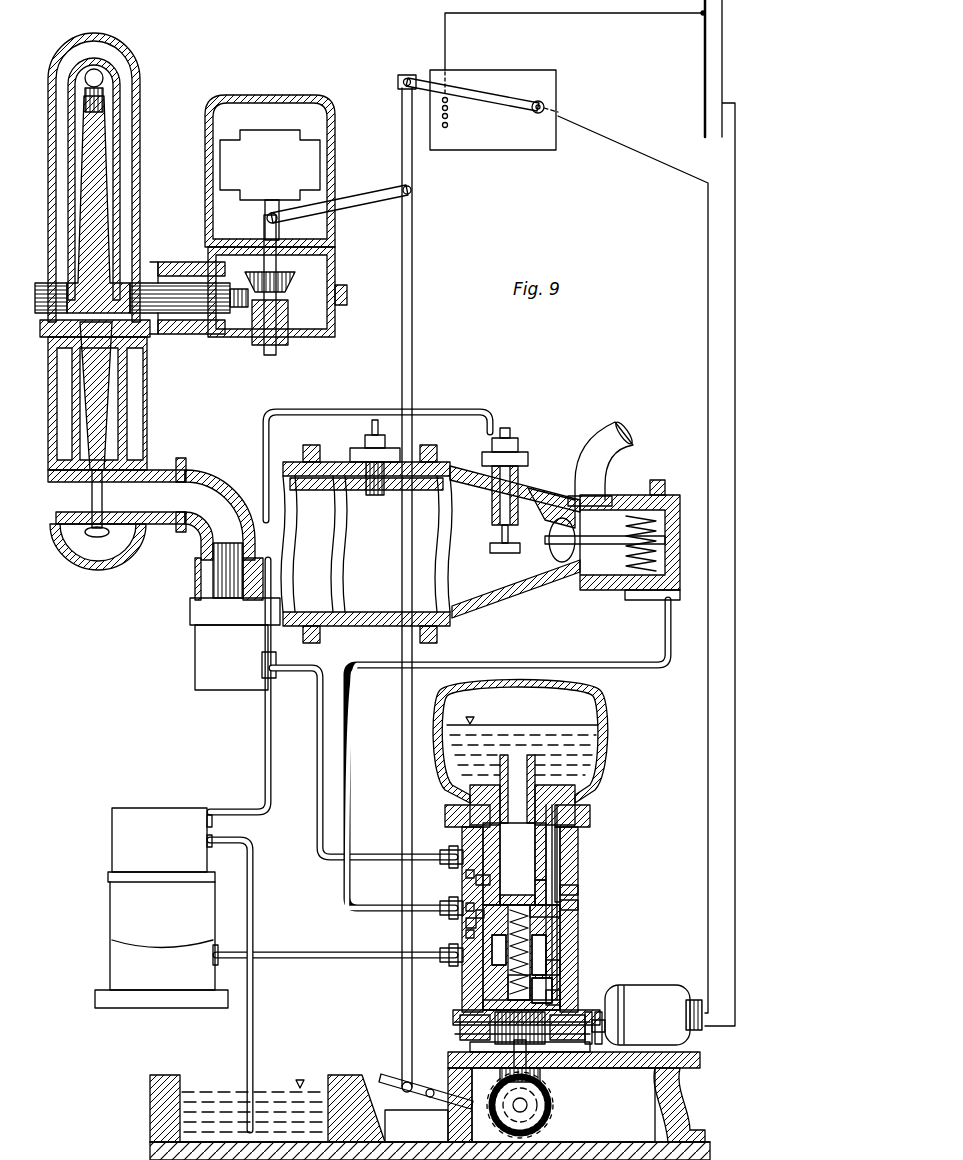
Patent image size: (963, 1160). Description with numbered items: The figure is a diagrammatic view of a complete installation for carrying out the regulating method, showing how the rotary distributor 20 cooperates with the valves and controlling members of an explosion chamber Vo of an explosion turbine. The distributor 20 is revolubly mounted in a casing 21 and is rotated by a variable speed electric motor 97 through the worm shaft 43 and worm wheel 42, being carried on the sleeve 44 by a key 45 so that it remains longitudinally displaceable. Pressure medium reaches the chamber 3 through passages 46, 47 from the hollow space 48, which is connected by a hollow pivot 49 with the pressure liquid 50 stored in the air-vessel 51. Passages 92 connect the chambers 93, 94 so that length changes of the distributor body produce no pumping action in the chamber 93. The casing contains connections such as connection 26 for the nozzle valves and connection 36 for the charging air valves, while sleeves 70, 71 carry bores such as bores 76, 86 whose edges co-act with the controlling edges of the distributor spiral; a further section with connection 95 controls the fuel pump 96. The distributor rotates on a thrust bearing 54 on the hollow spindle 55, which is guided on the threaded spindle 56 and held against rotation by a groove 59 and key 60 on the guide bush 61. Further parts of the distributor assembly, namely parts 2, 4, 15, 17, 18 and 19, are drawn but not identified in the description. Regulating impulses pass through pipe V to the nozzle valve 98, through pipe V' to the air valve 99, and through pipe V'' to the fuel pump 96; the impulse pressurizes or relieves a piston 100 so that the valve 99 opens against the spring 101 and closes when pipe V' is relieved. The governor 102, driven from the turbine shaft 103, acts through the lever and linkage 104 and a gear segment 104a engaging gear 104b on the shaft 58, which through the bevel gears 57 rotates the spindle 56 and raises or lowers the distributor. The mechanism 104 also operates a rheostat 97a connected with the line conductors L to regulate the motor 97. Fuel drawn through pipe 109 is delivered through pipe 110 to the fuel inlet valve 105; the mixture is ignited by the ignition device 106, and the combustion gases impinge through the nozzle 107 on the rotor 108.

The rheostat 97a is at (500, 78).
The line conductors L is at (722, 55).
The governor 102 is at (305, 160).
The turbine shaft 103 is at (180, 300).
The lever and linkage 104 is at (400, 215).
The rotor 108 is at (100, 380).
The pipe 110 is at (435, 412).
The explosion chamber Vo is at (300, 490).
The ignition device 106 is at (374, 458).
The fuel inlet valve 105 is at (508, 490).
The piston 100 is at (632, 508).
The air valve 99 is at (550, 544).
The spring 101 is at (628, 568).
The nozzle 107 is at (172, 508).
The nozzle valve 98 is at (215, 558).
The pipe V' is at (507, 754).
The pipe V is at (358, 754).
The pipe V'' is at (335, 942).
The chamber 93 is at (482, 800).
The pressure liquid 50 is at (512, 728).
The hollow pivot 49 is at (517, 768).
The air-vessel 51 is at (600, 718).
The sleeve 70 is at (455, 818).
The connection 26 is at (448, 852).
The bolt 18 is at (465, 874).
The inlet 4 is at (462, 895).
The connection 36 is at (465, 907).
The chamber 3 is at (476, 914).
The bore 86 is at (468, 922).
The bolt 19 is at (465, 934).
The connection 95 is at (470, 960).
The worm shaft 42 is at (470, 1012).
The passage 46 is at (500, 835).
The bore 76 is at (495, 860).
The passage 47 is at (542, 850).
The packing 15 is at (490, 880).
The hollow space 48 is at (540, 892).
The thrust bearing 54 is at (505, 906).
The flange 17 is at (578, 823).
The casing 21 is at (578, 845).
The passages 92 is at (558, 862).
The cylinder 2 is at (578, 868).
The sleeve 71 is at (580, 893).
The distributor 20 is at (565, 905).
The hollow spindle 55 is at (560, 918).
The groove 59 is at (540, 940).
The key 60 is at (545, 950).
The threaded spindle 56 is at (562, 965).
The key 45 is at (535, 980).
The guide bush 61 is at (555, 990).
The chamber 94 is at (552, 995).
The sleeve 44 is at (565, 1002).
The variable speed electric motor 97 is at (650, 1002).
The fuel pump 96 is at (162, 830).
The pipe 109 is at (251, 900).
The worm wheel 43 is at (432, 1097).
The gear segment 104a is at (470, 1112).
The gear 104b is at (550, 1125).
The bevel gears 57 is at (545, 1078).
The gearing shaft 58 is at (540, 1108).